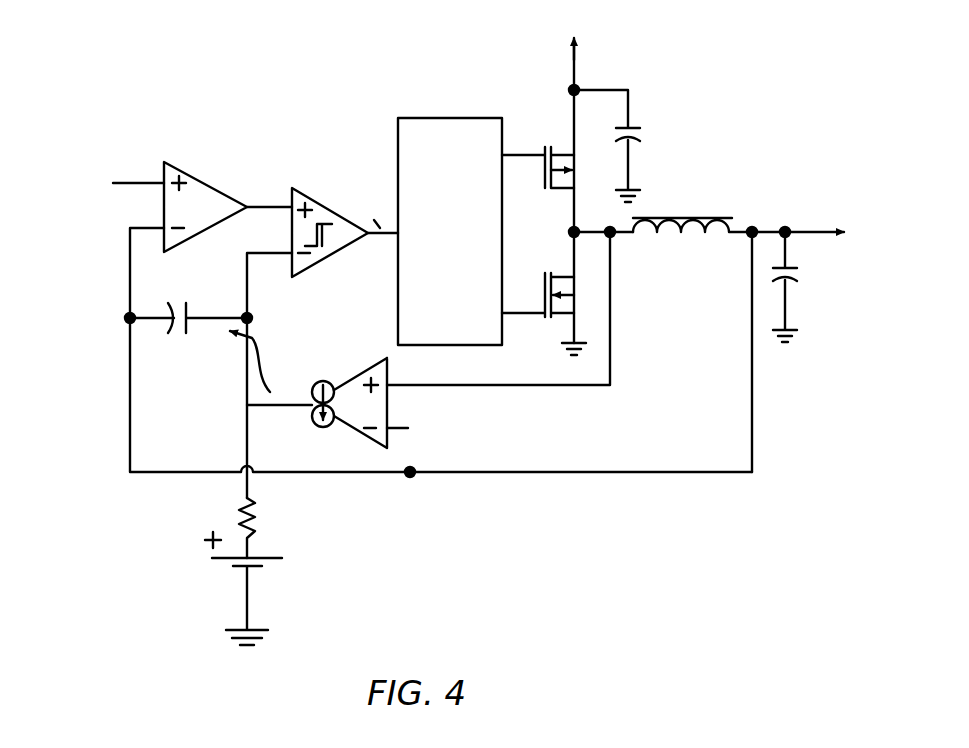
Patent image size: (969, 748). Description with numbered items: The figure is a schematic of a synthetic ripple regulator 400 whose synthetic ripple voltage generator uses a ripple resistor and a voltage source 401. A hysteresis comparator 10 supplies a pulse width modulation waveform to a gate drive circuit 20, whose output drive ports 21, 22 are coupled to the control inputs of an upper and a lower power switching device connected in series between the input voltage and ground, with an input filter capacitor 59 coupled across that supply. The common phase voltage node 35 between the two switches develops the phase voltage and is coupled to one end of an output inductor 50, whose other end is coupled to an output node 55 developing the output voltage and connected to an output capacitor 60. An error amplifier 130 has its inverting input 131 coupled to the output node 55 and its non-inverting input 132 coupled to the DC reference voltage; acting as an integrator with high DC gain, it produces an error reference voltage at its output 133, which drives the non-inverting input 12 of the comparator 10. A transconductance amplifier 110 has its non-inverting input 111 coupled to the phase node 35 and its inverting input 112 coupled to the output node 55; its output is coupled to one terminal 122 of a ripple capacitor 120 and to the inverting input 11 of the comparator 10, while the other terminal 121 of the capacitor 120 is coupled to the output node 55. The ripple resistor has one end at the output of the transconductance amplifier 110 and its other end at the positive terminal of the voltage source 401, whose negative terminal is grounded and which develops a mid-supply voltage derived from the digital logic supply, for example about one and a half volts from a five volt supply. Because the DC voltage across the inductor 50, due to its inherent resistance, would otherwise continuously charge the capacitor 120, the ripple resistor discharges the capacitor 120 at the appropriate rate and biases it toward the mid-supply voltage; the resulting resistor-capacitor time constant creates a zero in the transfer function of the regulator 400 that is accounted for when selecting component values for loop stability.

The synthetic ripple regulator 400 is at (782, 102).
The hysteresis comparator 10 is at (333, 212).
The inverting input 11 is at (283, 253).
The non-inverting input 12 is at (288, 210).
The gate drive circuit 20 is at (463, 118).
The output drive port 21 is at (503, 153).
The output drive port 22 is at (505, 316).
The phase voltage node 35 is at (572, 232).
The output inductor 50 is at (707, 218).
The output node 55 is at (752, 228).
The input filter capacitor 59 is at (636, 130).
The output capacitor 60 is at (803, 272).
The transconductance amplifier 110 is at (360, 376).
The non-inverting input 111 is at (392, 385).
The inverting input 112 is at (395, 436).
The ripple capacitor 120 is at (175, 342).
The capacitor terminal 121 is at (126, 320).
The capacitor terminal 122 is at (206, 315).
The error amplifier 130 is at (218, 190).
The inverting input 131 is at (128, 222).
The non-inverting input 132 is at (115, 184).
The output 133 is at (248, 206).
The voltage source 401 is at (233, 562).